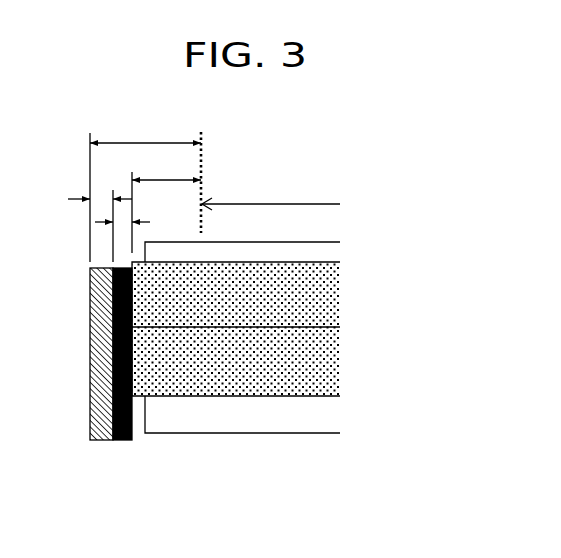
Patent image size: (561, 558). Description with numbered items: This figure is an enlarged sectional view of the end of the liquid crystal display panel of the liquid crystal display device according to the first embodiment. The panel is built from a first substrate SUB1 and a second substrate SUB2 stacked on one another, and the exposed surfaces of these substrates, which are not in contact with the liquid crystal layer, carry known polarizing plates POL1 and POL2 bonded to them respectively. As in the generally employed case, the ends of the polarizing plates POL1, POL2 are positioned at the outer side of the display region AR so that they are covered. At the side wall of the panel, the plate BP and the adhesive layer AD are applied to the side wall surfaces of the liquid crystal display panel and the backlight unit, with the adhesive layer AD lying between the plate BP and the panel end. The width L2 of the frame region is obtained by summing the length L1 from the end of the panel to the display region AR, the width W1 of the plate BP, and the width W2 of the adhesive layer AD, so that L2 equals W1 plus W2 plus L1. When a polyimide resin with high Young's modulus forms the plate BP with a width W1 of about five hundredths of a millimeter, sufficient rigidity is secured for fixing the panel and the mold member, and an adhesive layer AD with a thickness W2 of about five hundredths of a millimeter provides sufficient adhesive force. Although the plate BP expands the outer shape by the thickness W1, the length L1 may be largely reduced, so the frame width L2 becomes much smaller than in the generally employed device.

The width of the frame region L2 is at (145, 132).
The length from the end of the liquid crystal display panel to the display region L1 is at (166, 169).
The width of the plate W1 is at (82, 199).
The width of the adhesive layer W2 is at (140, 221).
The display region AR is at (271, 195).
The polarizing plate POL2 is at (327, 254).
The second substrate SUB2 is at (322, 304).
The first substrate SUB1 is at (322, 367).
The polarizing plate POL1 is at (320, 418).
The plate BP is at (90, 440).
The adhesive layer AD is at (118, 440).